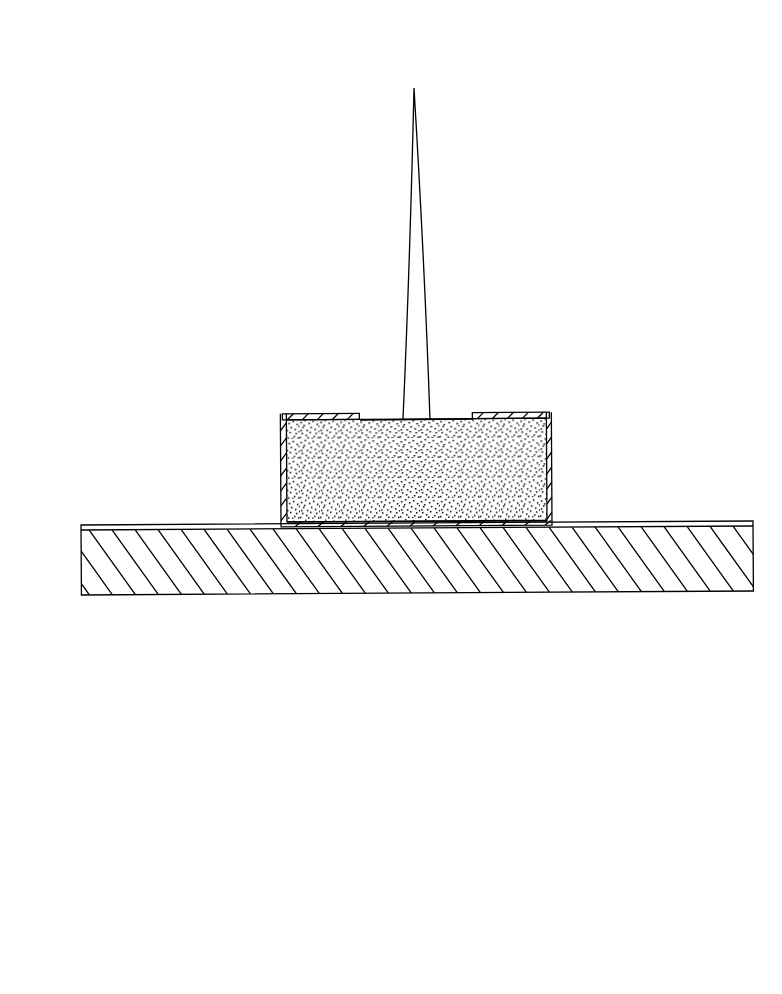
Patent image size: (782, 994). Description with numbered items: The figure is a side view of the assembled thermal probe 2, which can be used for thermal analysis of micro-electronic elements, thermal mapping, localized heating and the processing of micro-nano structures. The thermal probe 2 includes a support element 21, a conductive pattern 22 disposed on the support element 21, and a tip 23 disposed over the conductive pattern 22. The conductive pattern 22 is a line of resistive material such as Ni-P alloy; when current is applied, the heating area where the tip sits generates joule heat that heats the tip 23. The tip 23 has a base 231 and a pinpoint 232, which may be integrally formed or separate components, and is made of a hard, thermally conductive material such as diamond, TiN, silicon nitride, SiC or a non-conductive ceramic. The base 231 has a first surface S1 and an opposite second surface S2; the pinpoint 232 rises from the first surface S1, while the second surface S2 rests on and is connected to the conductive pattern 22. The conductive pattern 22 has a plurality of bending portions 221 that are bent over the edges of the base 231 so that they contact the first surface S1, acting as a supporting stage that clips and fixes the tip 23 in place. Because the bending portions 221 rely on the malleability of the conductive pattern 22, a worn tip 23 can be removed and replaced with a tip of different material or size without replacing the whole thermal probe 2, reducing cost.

The thermal probe 2 is at (132, 182).
The support element 21 is at (580, 570).
The conductive pattern 22 is at (505, 527).
The bending portions 221 is at (337, 415).
The tip 23 is at (416, 305).
The base 231 is at (395, 428).
The pinpoint 232 is at (414, 178).
The first surface S1 is at (451, 419).
The second surface S2 is at (381, 527).